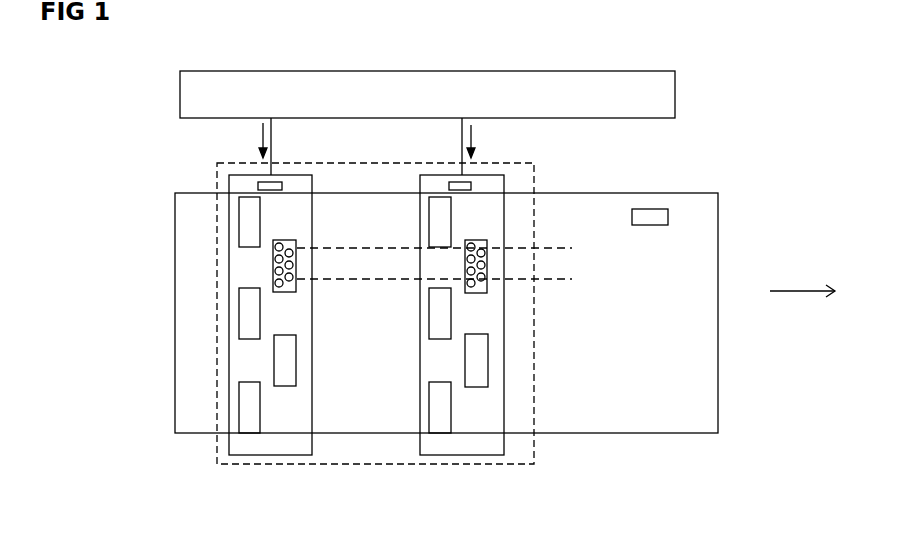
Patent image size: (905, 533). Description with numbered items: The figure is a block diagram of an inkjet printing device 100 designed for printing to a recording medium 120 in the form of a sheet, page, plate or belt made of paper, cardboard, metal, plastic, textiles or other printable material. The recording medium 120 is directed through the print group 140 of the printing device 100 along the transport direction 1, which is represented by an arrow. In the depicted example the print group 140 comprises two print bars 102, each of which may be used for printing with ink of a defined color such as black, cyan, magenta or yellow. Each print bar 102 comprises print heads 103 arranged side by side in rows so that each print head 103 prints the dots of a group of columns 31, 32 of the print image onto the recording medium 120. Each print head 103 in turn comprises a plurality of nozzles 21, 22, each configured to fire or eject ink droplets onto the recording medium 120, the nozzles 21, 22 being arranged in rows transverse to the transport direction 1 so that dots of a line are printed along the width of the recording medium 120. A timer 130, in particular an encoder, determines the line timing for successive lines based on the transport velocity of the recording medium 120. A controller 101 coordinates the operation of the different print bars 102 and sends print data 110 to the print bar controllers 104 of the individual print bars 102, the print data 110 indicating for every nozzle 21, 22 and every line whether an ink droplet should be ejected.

The printing device 100 is at (143, 96).
The controller 101 is at (675, 95).
The print data 110 is at (262, 137).
The print group 140 is at (416, 162).
The recording medium 120 is at (175, 334).
The print bar 102 is at (300, 175).
The print bar controller 104 is at (258, 186).
The print head 103 is at (240, 241).
The nozzle 21 is at (284, 240).
The nozzle 22 is at (293, 278).
The column 31 is at (377, 246).
The column 32 is at (341, 281).
The timer 130 is at (652, 209).
The transport direction 1 is at (793, 296).